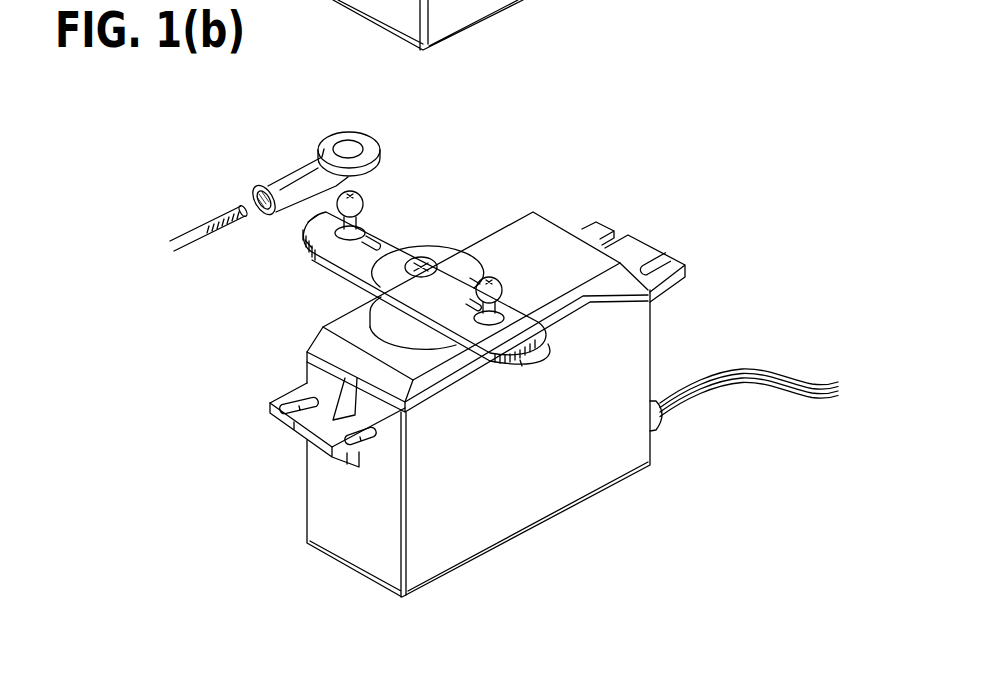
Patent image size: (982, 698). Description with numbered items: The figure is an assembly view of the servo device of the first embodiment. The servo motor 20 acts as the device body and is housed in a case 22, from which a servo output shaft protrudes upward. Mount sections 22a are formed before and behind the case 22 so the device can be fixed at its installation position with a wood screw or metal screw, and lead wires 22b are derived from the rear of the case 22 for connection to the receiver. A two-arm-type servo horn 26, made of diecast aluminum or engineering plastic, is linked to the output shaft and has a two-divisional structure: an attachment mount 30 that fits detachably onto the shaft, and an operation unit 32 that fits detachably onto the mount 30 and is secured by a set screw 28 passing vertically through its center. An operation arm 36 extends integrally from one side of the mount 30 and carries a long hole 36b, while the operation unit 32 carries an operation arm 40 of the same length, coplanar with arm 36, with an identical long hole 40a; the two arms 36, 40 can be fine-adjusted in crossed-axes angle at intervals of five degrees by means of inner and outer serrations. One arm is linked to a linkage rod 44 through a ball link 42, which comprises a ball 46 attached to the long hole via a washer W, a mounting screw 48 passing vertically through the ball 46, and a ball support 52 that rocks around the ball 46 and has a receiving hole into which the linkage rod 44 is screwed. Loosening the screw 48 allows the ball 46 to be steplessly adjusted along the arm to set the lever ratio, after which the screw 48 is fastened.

The servo motor 20 is at (566, 214).
The case 22 is at (562, 478).
The mount sections 22a is at (645, 258).
The lead wires 22b is at (743, 365).
The servo horn 26 is at (350, 284).
The set screw 28 is at (425, 264).
The attachment mount 30 is at (374, 330).
The operation unit 32 is at (478, 263).
The operation arm 36 is at (368, 216).
The long hole 36b is at (372, 246).
The operation arm 40 is at (518, 356).
The long hole 40a is at (498, 318).
The ball link 42 is at (292, 152).
The linkage rod 44 is at (186, 232).
The ball 46 is at (307, 221).
The mounting screw 48 is at (349, 192).
The ball support 52 is at (293, 171).
The washer W is at (313, 252).